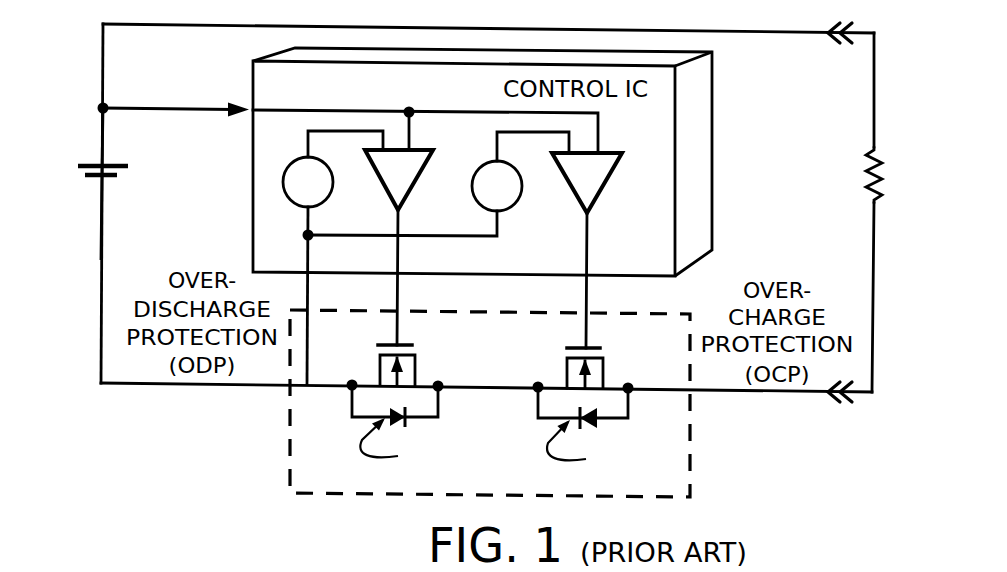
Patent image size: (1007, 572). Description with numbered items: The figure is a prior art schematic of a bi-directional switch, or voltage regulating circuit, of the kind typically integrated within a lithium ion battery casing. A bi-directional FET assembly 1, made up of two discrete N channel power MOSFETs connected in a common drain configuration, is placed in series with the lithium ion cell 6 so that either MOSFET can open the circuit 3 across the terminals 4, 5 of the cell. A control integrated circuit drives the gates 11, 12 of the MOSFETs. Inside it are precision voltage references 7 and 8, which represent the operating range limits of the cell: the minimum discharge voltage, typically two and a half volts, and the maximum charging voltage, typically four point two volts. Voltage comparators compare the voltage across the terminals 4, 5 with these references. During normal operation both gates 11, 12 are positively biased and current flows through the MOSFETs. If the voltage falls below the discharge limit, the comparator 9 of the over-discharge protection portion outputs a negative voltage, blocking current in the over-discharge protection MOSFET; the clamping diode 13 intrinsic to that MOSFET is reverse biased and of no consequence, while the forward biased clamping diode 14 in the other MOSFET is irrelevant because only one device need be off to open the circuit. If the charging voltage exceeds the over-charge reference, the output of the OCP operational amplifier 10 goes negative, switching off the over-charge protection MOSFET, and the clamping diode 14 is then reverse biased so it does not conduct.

The bi-directional FET assembly 1 is at (288, 428).
The circuit 3 is at (580, 33).
The terminal 4 is at (125, 162).
The terminal 5 is at (113, 178).
The cell 6 is at (90, 158).
The precision voltage reference 7 is at (318, 162).
The precision voltage reference 8 is at (502, 163).
The comparator 9 is at (420, 183).
The OCP operational amplifier 10 is at (607, 189).
The gate 11 is at (410, 346).
The gate 12 is at (597, 349).
The clamping diode 13 is at (405, 425).
The clamping diode 14 is at (600, 425).